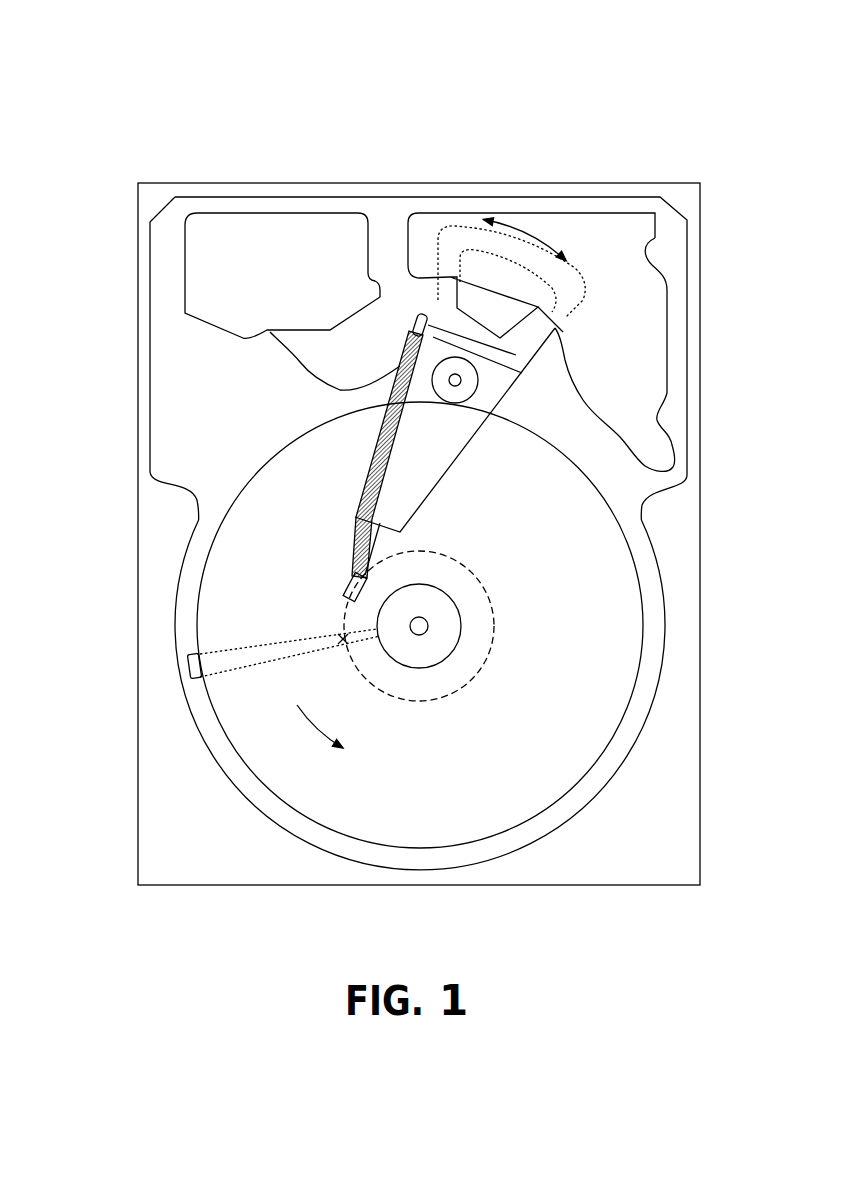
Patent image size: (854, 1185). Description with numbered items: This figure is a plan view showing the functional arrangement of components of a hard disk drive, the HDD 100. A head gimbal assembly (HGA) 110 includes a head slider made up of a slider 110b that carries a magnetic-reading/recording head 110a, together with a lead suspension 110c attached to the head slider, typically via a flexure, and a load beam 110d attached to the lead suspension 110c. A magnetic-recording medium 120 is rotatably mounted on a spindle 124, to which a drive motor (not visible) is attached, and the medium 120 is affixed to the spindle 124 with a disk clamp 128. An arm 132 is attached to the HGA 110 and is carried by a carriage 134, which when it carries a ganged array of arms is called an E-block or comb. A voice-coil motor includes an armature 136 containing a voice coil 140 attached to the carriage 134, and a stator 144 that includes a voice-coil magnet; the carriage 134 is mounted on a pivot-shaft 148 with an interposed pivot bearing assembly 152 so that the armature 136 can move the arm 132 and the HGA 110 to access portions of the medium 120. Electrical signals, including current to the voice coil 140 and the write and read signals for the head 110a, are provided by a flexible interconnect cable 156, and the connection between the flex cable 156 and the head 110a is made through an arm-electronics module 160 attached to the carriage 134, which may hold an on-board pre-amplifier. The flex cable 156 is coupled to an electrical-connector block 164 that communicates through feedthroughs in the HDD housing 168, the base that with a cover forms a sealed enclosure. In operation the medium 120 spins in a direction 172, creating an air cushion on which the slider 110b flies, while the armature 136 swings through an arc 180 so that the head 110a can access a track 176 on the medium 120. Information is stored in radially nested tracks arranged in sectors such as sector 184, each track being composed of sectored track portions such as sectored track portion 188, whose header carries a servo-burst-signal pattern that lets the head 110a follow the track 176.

The hard disk drive 100 is at (76, 80).
The head gimbal assembly 110 is at (193, 530).
The magnetic-reading/recording head 110a is at (345, 606).
The slider 110b is at (352, 578).
The lead suspension 110c is at (357, 547).
The load beam 110d is at (358, 520).
The magnetic-recording medium 120 is at (572, 586).
The spindle 124 is at (424, 624).
The disk clamp 128 is at (440, 642).
The arm 132 is at (412, 482).
The carriage 134 is at (472, 412).
The armature 136 is at (420, 272).
The voice coil 140 is at (446, 285).
The stator 144 is at (640, 297).
The pivot-shaft 148 is at (465, 378).
The pivot bearing assembly 152 is at (470, 398).
The flexible interconnect cable 156 is at (298, 360).
The arm-electronics module 160 is at (412, 350).
The electrical-connector block 164 is at (208, 273).
The HDD housing 168 is at (685, 193).
The direction 172 is at (318, 737).
The track 176 is at (490, 600).
The arc 180 is at (520, 224).
The sector 184 is at (188, 666).
The sectored track portion 188 is at (332, 638).